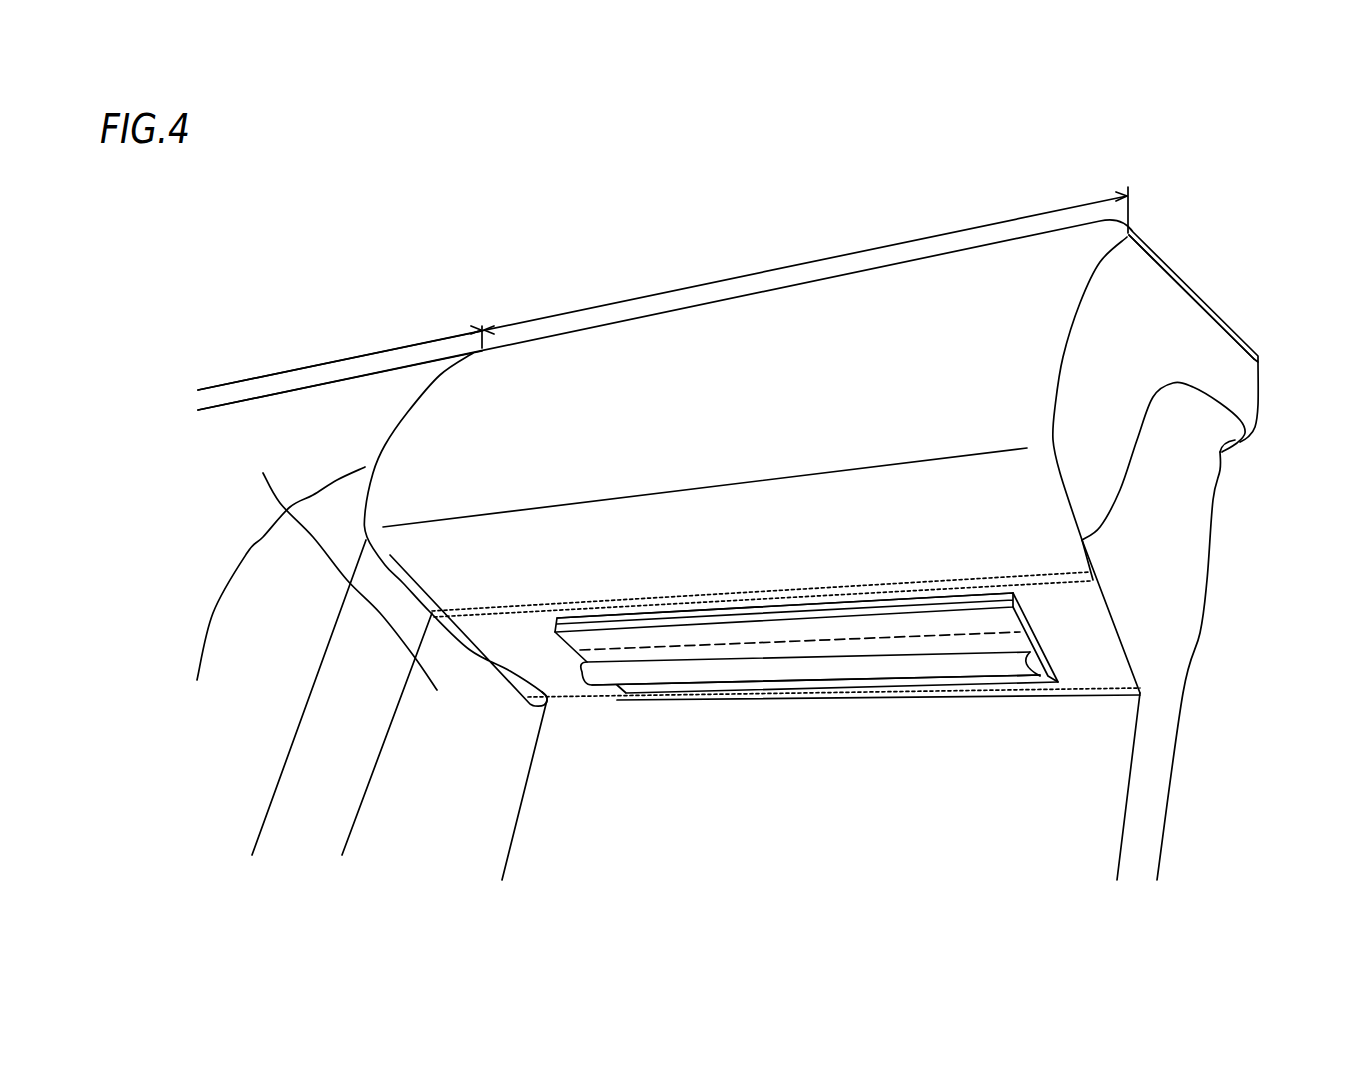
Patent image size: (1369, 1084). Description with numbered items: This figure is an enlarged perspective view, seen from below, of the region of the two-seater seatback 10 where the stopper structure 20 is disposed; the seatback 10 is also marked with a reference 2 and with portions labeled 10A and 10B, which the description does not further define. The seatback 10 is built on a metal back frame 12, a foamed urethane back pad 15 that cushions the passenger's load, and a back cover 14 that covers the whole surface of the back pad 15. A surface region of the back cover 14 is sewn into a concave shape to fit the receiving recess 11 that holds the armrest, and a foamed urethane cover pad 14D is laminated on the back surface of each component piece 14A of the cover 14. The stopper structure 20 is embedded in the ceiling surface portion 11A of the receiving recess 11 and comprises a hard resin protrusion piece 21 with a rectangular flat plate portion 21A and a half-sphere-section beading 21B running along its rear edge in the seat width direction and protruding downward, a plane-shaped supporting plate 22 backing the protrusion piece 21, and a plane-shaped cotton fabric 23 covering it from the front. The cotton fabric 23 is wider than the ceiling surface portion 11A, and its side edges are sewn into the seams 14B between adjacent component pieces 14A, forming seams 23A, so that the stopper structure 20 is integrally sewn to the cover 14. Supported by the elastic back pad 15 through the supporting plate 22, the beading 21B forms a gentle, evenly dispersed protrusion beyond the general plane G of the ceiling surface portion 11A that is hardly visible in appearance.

The two-seater seatback 10 is at (728, 291).
The vehicle body 2 is at (1167, 232).
The front portion of roof side rail 10A is at (318, 365).
The rear portion of roof side rail 10B is at (760, 272).
The back cover 14 is at (1178, 305).
The back frame 12 is at (1214, 297).
The back pad 15 is at (1201, 330).
The component piece 14A is at (756, 536).
The cover pad 14D is at (290, 610).
The seams 14B is at (1137, 675).
The seams 23A is at (908, 637).
The receiving recess 11 is at (1072, 770).
The ceiling surface portion 11A is at (1093, 657).
The general plane G is at (553, 672).
The stopper structure 20 is at (806, 683).
The protrusion piece 21 is at (861, 673).
The flat plate portion 21A is at (797, 650).
The beading 21B is at (753, 670).
The cotton fabric 23 is at (785, 683).
The supporting plate 22 is at (1025, 632).